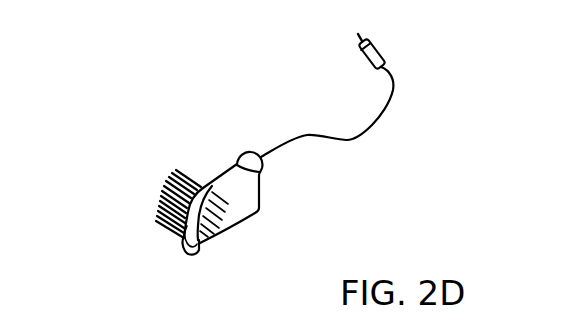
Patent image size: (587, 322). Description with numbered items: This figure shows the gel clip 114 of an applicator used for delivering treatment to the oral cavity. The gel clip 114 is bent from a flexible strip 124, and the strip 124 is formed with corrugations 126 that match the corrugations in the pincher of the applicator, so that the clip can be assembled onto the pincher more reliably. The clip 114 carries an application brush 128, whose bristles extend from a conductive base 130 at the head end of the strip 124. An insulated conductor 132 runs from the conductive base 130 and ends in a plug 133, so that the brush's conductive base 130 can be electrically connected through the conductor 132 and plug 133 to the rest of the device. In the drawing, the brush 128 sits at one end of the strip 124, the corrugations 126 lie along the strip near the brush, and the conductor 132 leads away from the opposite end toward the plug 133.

The gel clip 114 is at (199, 144).
The flexible strip 124 is at (257, 212).
The corrugations 126 is at (184, 232).
The application brush 128 is at (136, 210).
The conductive base 130 is at (176, 229).
The insulated conductor 132 is at (393, 96).
The plug 133 is at (384, 44).